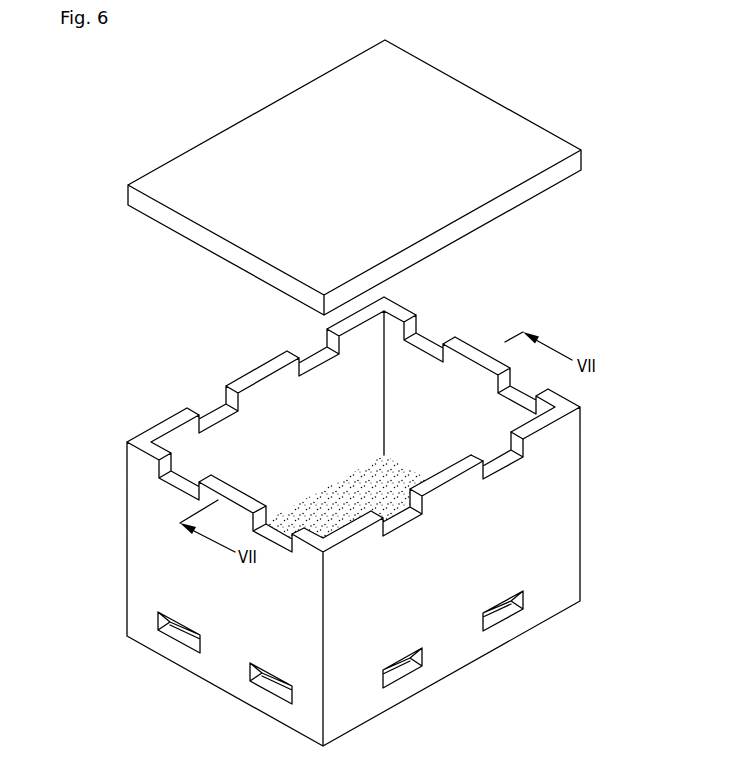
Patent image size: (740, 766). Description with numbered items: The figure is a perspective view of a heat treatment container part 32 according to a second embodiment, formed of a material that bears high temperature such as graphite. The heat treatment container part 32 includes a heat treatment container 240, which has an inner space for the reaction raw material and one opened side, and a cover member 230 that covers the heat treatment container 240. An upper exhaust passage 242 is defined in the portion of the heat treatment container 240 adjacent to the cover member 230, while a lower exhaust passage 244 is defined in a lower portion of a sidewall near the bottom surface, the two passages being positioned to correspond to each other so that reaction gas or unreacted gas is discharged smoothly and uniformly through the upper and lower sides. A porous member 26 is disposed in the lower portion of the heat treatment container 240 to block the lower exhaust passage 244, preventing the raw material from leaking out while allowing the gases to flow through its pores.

The cover member 230 is at (585, 164).
The heat treatment container 240 is at (582, 432).
The upper exhaust passage 242 is at (512, 467).
The lower exhaust passage 244 is at (505, 617).
The porous member 26 is at (320, 504).
The heat treatment container part 32 is at (654, 162).